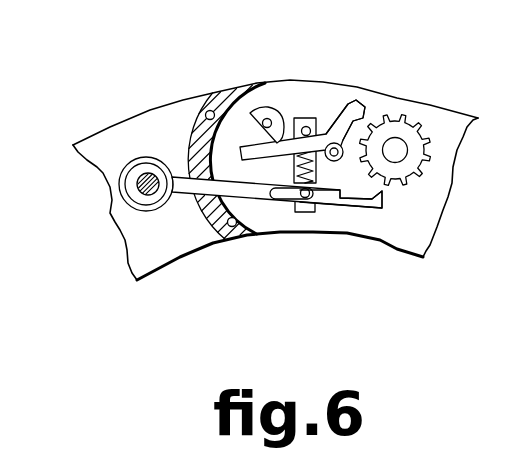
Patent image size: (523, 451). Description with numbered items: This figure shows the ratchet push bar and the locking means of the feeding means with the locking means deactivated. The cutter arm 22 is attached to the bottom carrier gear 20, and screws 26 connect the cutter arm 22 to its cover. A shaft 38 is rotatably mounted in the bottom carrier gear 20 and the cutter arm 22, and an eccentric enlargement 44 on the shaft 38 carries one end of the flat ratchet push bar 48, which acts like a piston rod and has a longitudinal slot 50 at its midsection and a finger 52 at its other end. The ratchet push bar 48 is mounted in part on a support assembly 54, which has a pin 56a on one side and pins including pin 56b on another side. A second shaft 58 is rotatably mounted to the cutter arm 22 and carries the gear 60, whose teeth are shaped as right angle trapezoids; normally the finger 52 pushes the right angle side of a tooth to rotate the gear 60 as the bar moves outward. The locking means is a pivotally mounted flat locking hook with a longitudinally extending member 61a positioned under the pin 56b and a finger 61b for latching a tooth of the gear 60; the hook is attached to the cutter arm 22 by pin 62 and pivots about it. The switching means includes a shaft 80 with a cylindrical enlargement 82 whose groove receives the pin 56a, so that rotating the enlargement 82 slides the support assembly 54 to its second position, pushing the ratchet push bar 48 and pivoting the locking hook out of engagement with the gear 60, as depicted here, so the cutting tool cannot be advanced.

The bottom carrier gear 20 is at (138, 133).
The cutter arm 22 is at (243, 230).
The screws 26 is at (208, 110).
The shaft 38 is at (140, 188).
The eccentric enlargement 44 is at (135, 183).
The ratchet push bar 48 is at (183, 194).
The longitudinal slot 50 is at (270, 196).
The finger 52 is at (383, 203).
The support assembly 54 is at (317, 178).
The pin 56a is at (307, 198).
The pin 56b is at (307, 126).
The shaft 58 is at (397, 153).
The gear 60 is at (405, 130).
The longitudinally extending member 61a is at (262, 144).
The finger 61b is at (362, 103).
The pin 62 is at (295, 171).
The shaft 80 is at (268, 118).
The cylindrical enlargement 82 is at (262, 107).